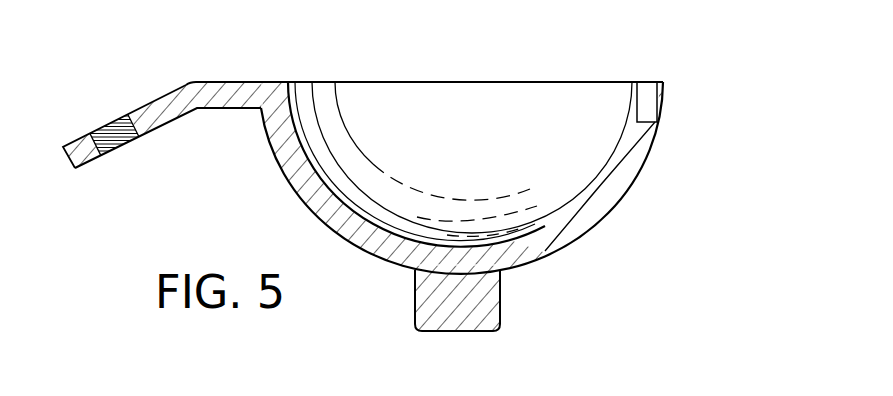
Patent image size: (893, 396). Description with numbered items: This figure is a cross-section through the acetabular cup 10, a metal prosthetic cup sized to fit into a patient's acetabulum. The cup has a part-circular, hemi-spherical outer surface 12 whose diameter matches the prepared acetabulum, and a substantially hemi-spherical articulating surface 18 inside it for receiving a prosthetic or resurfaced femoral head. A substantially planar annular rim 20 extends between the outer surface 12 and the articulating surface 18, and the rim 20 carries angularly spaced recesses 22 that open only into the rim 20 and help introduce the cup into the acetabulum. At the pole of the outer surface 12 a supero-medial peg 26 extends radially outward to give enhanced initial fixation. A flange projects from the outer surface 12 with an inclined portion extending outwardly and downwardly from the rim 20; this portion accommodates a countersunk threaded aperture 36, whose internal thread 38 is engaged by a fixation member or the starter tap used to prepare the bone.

The acetabular cup 10 is at (738, 54).
The outer surface 12 is at (620, 200).
The articulating surface 18 is at (610, 157).
The annular rim 20 is at (663, 83).
The recess 22 is at (660, 101).
The supero-medial peg 26 is at (416, 323).
The countersunk threaded aperture 36 is at (102, 125).
The internal thread 38 is at (120, 148).